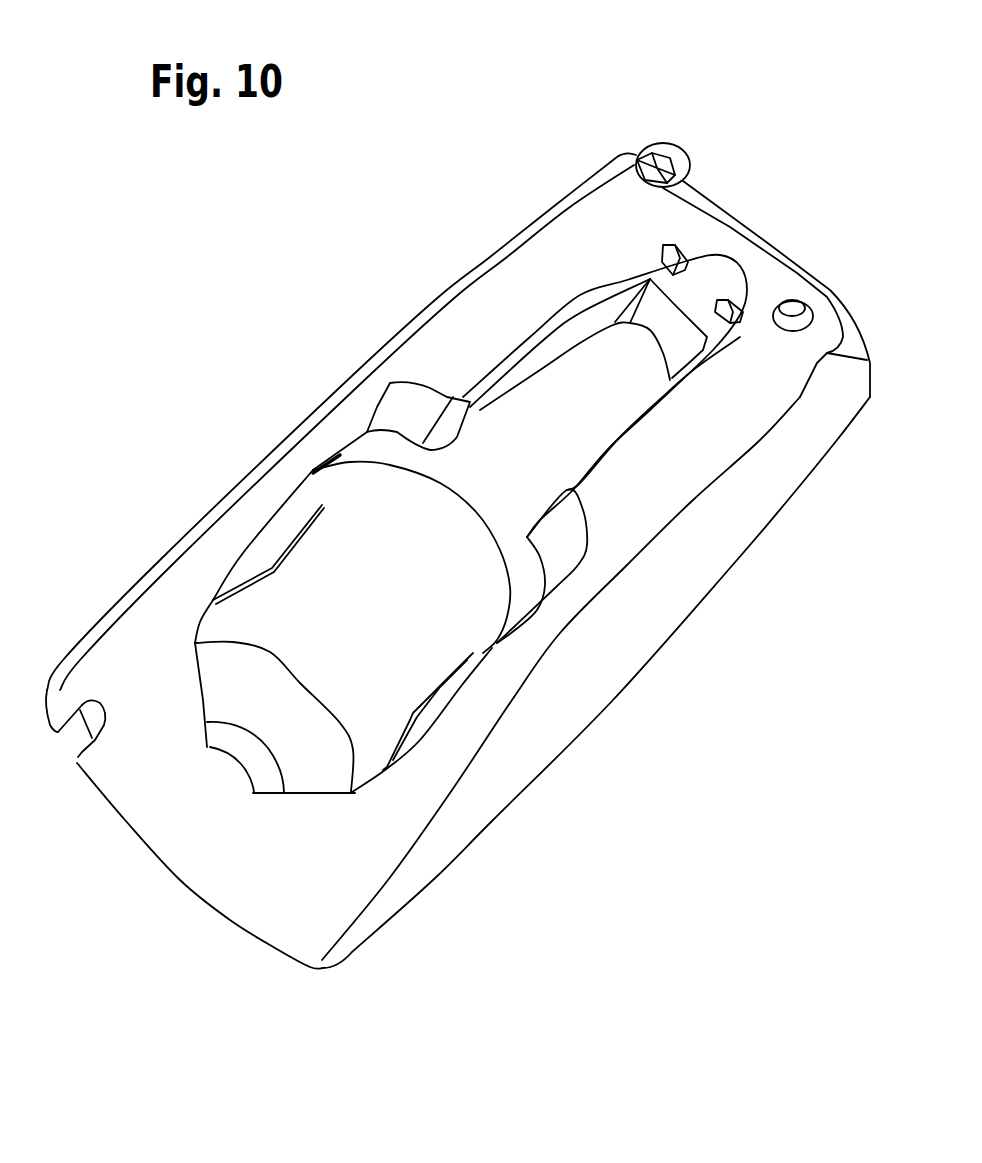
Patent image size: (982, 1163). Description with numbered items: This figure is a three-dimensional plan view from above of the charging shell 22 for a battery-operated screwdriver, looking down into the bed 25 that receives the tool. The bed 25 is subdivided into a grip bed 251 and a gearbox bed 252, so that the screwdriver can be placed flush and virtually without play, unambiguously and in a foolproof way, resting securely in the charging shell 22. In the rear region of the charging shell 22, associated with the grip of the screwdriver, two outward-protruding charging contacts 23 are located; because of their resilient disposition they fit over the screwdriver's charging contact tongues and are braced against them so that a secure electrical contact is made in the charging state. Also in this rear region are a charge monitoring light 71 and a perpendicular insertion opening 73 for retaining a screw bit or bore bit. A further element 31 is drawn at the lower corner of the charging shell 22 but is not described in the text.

The charging shell 22 is at (605, 112).
The charging contacts 23 is at (683, 257).
The bed 25 is at (432, 490).
The grip bed 251 is at (583, 407).
The gearbox bed 252 is at (330, 647).
The hook 31 is at (78, 732).
The charge monitoring light 71 is at (797, 307).
The insertion opening 73 is at (682, 160).